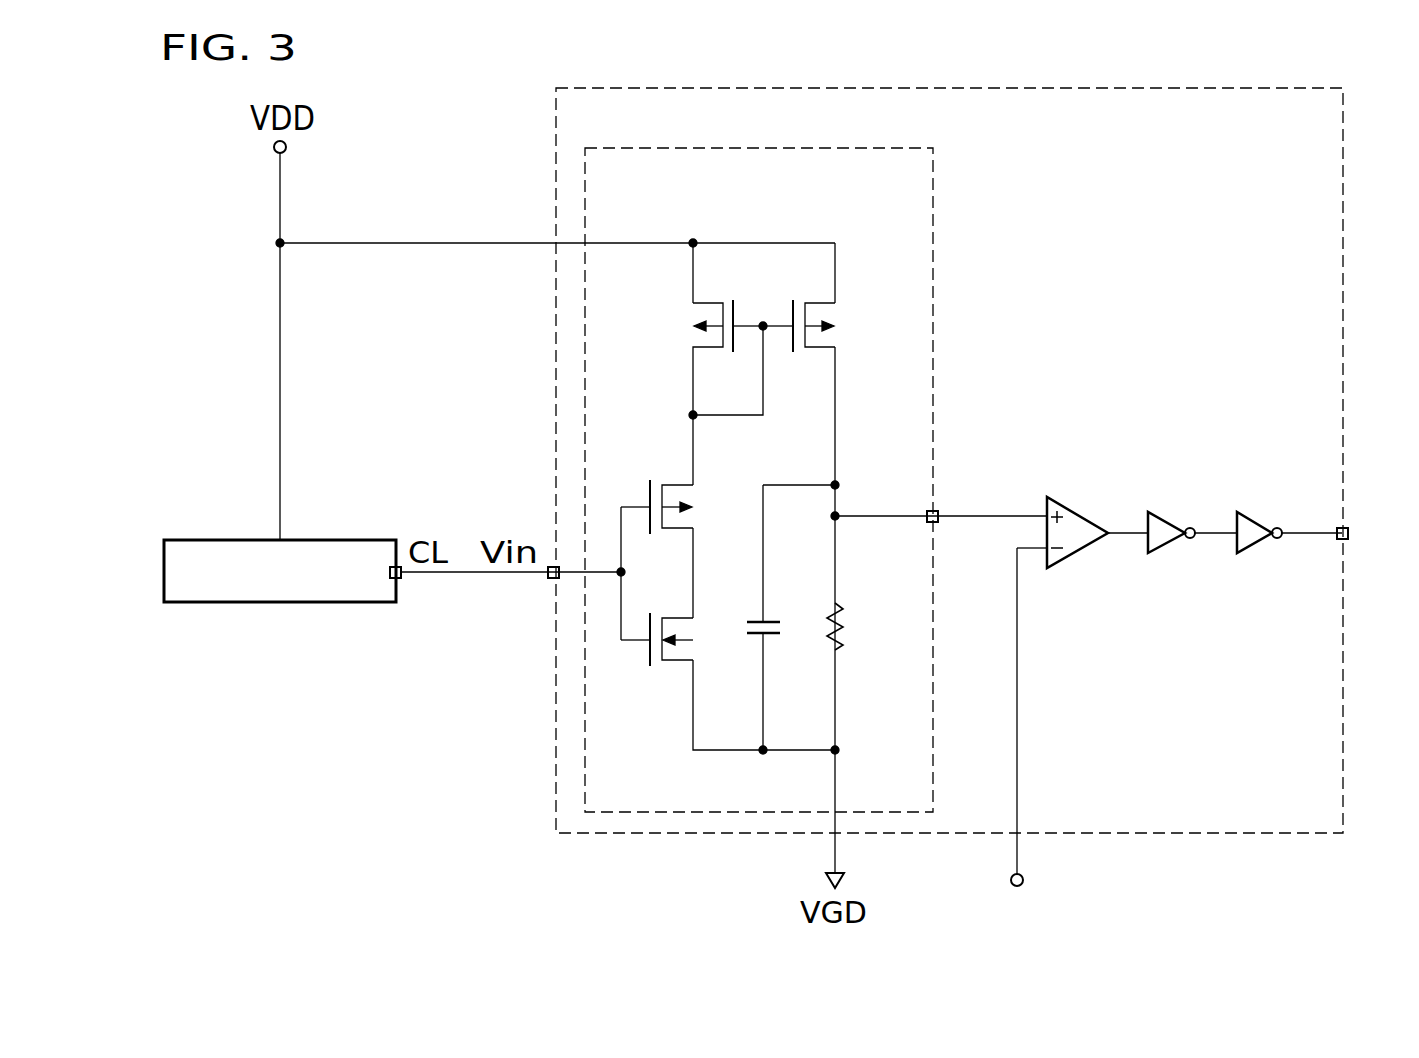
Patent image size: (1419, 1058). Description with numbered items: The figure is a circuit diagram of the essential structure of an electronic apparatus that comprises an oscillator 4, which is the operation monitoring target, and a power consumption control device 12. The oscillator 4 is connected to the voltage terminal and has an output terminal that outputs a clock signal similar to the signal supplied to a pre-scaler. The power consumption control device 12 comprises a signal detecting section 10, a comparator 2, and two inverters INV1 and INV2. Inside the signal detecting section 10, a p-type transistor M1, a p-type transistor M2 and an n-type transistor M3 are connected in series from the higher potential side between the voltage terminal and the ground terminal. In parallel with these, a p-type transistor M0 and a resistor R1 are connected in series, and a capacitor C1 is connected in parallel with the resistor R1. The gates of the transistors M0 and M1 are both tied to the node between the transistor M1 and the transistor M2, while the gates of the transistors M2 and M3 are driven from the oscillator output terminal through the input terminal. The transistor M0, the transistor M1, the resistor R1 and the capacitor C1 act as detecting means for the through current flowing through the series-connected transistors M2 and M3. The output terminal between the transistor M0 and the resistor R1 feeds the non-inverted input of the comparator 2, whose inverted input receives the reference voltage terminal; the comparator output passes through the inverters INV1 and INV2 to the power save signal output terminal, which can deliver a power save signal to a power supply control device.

The comparator 2 is at (1078, 509).
The oscillator 4 is at (211, 540).
The signal detecting section 10 is at (786, 148).
The power consumption control device 12 is at (1121, 88).
The p-type transistor M0 is at (840, 338).
The p-type transistor M1 is at (690, 328).
The p-type transistor M2 is at (698, 497).
The n-type transistor M3 is at (698, 647).
The capacitor C1 is at (783, 623).
The resistor R1 is at (845, 632).
The inverter INV1 is at (1172, 512).
The inverter INV2 is at (1258, 512).